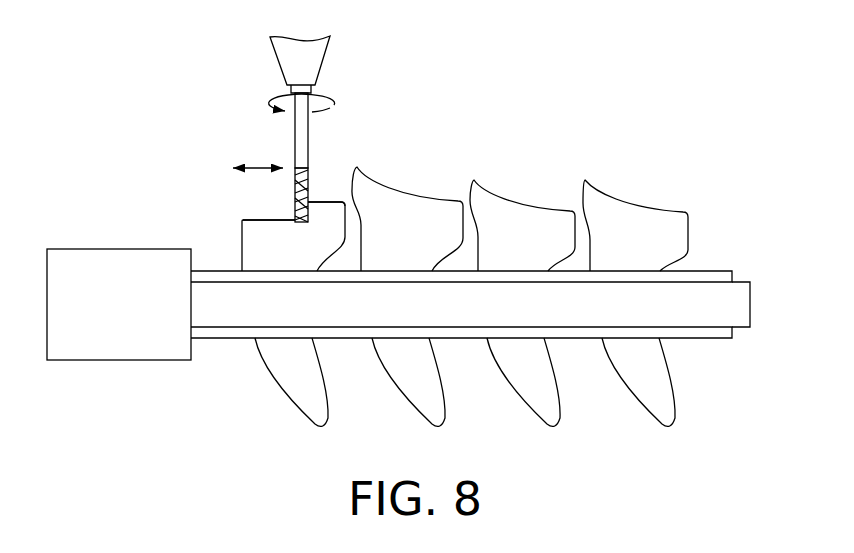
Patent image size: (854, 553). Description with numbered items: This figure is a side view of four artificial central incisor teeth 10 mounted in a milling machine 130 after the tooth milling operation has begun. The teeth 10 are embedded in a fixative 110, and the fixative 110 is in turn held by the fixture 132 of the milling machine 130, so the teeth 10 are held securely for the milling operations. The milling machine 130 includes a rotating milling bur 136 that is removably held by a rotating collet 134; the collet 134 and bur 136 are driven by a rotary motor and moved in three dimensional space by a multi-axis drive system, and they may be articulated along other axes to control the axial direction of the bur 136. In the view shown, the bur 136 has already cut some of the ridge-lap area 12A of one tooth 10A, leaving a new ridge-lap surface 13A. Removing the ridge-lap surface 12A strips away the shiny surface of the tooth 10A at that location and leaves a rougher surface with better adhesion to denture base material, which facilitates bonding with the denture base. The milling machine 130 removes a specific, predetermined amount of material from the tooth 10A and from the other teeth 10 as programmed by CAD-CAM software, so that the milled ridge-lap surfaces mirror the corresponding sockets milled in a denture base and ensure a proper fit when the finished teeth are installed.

The central incisor teeth 10 is at (622, 168).
The tooth 10A is at (242, 237).
The ridge-lap area 12A is at (326, 200).
The new ridge-lap surface 13A is at (262, 216).
The fixative 110 is at (705, 270).
The milling machine 130 is at (235, 103).
The fixture 132 is at (750, 305).
The collet 134 is at (322, 58).
The milling bur 136 is at (295, 137).